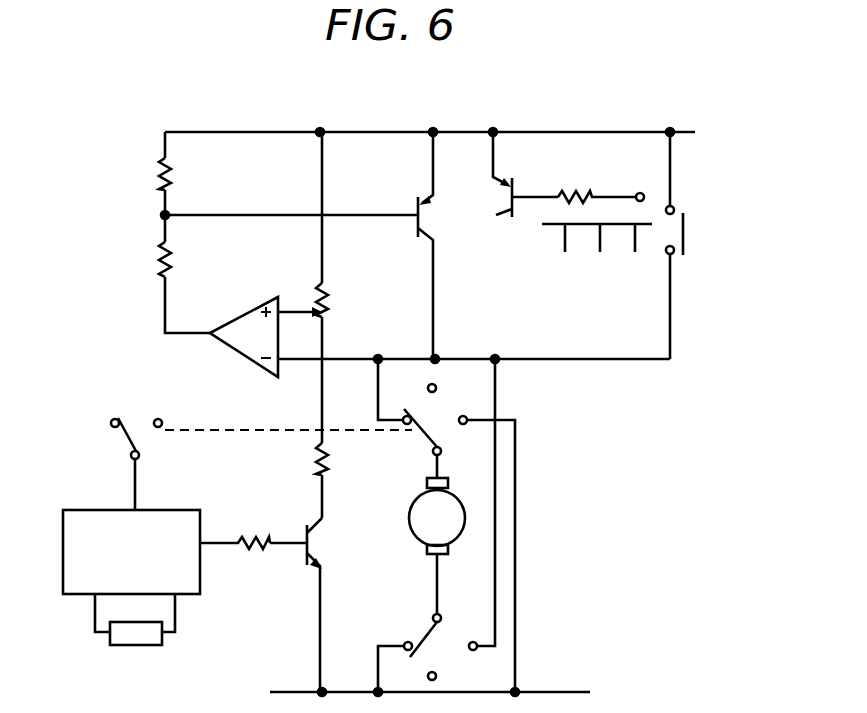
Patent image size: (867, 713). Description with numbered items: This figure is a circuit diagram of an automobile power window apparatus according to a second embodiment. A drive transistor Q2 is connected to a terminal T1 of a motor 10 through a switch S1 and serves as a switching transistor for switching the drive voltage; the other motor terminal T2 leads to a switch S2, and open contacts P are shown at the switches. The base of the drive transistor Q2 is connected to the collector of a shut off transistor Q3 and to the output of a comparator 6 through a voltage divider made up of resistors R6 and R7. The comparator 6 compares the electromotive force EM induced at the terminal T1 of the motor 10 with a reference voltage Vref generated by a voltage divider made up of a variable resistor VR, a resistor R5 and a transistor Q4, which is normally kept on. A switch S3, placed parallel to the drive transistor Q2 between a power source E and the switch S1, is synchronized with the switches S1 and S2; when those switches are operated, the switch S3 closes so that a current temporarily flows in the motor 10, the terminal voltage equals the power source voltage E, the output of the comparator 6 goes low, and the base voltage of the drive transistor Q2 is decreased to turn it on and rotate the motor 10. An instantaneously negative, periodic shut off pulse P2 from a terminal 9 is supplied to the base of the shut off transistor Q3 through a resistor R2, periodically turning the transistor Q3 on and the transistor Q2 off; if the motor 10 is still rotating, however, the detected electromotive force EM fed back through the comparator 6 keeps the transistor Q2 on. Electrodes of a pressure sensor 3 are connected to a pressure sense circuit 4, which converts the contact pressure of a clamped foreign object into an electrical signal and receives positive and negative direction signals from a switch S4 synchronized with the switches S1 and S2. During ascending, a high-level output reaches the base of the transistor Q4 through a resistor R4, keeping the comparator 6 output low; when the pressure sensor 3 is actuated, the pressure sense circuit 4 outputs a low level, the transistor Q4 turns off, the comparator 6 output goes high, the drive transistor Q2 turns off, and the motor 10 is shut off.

The pressure sensor 3 is at (136, 647).
The pressure sense circuit 4 is at (162, 509).
The comparator 6 is at (245, 367).
The terminal 9 is at (642, 192).
The motor 10 is at (413, 540).
The power source E is at (442, 122).
The resistor R6 is at (186, 176).
The resistor R7 is at (186, 261).
The variable resistor VR is at (342, 301).
The resistor R5 is at (342, 460).
The reference voltage Vref is at (289, 303).
The electromotive force EM is at (347, 356).
The drive transistor Q2 is at (428, 234).
The shut off transistor Q3 is at (508, 186).
The resistor R2 is at (596, 181).
The shut off pulse P2 is at (604, 242).
The switch S3 is at (684, 226).
The switch S1 is at (424, 424).
The switch S2 is at (428, 639).
The contact P is at (443, 533).
The terminal T1 is at (424, 486).
The motor terminal T2 is at (448, 553).
The transistor Q4 is at (316, 552).
The resistor R4 is at (236, 562).
The switch S4 is at (123, 442).